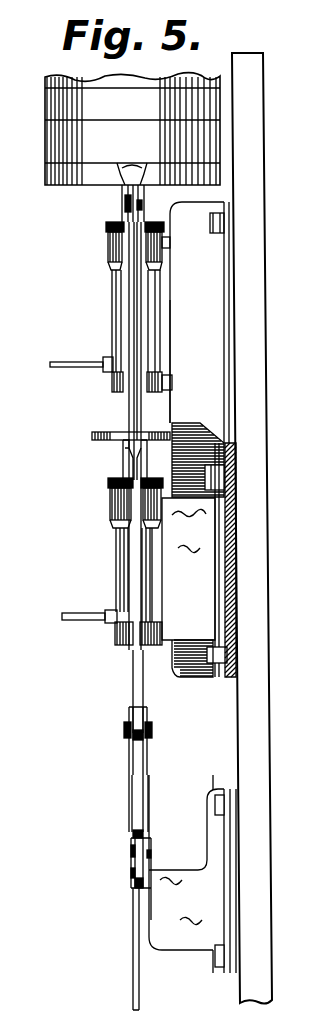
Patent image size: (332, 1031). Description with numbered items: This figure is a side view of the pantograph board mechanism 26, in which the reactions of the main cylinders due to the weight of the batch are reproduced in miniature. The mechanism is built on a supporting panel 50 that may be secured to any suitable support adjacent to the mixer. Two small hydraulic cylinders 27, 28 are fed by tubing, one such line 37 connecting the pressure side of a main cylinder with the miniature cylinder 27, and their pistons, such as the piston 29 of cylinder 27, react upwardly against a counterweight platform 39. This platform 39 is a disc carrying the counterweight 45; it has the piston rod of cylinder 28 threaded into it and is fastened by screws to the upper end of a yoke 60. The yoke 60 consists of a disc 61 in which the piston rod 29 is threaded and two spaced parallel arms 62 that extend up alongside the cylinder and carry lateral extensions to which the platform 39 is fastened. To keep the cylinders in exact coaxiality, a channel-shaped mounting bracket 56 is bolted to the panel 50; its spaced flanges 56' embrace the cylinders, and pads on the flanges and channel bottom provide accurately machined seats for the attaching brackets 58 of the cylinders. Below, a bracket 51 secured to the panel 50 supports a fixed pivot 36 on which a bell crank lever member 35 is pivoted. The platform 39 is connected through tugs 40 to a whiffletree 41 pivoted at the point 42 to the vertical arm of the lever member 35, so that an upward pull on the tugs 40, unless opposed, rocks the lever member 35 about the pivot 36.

The counterweight 45 is at (45, 102).
The supporting panel 50 is at (240, 58).
The counterweight platform 39 is at (95, 172).
The yoke 60 is at (124, 204).
The pantograph board mechanism 26 is at (85, 297).
The hydraulic cylinder 28 is at (118, 306).
The mounting bracket 56 is at (199, 349).
The spaced flanges 56' is at (194, 361).
The parallel arms 62 is at (128, 403).
The disc 61 is at (92, 436).
The piston 29 is at (125, 468).
The hydraulic cylinder 27 is at (120, 553).
The line 37 is at (81, 611).
The attaching brackets of the cylinders 58 is at (212, 583).
The tugs 40 is at (137, 669).
The whiffletree 41 is at (130, 710).
The whiffletree pivot 42 is at (125, 733).
The lever member 35 is at (128, 781).
The fixed pivot 36 is at (130, 857).
The bracket 51 is at (198, 878).